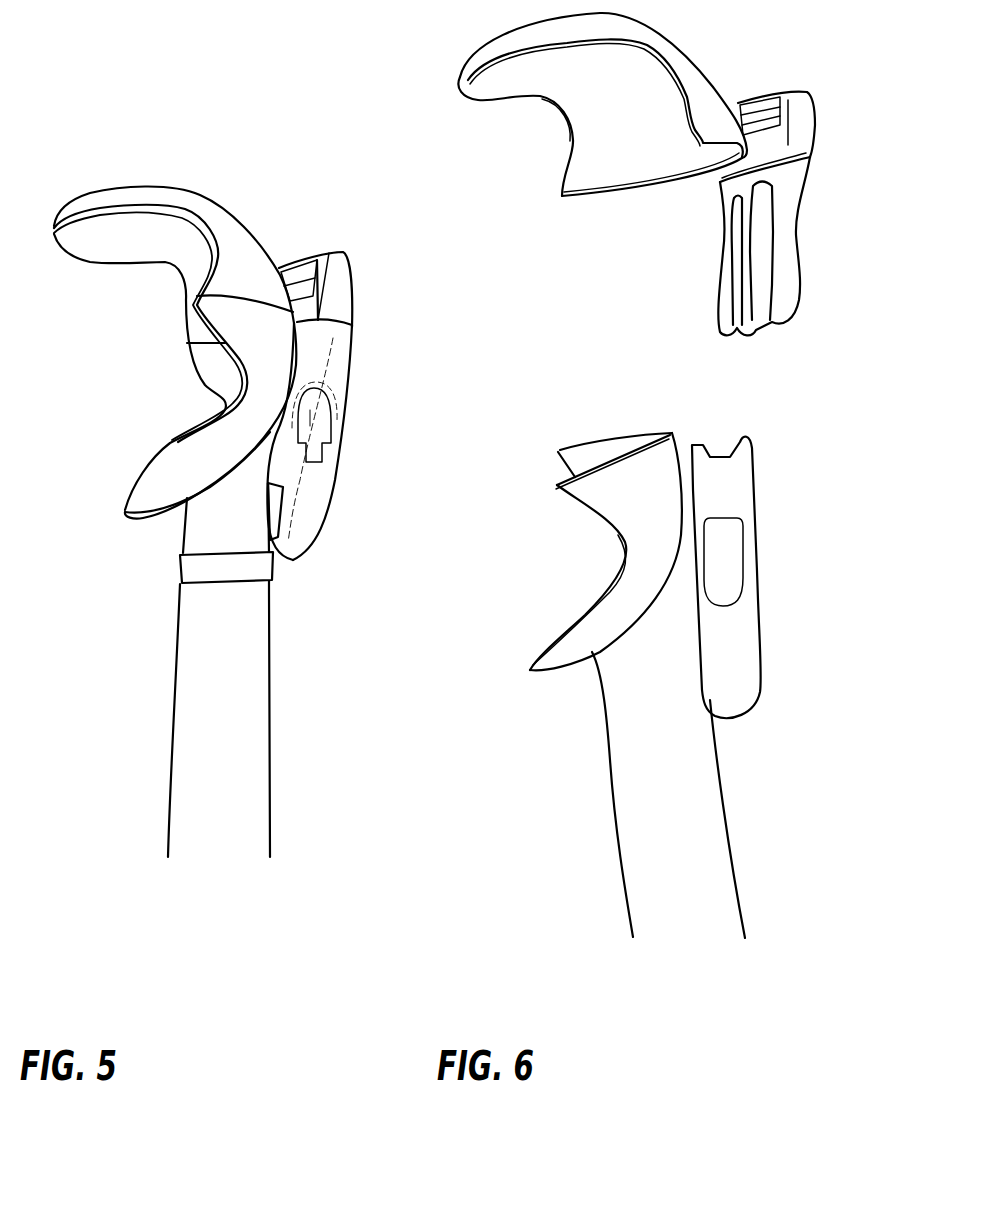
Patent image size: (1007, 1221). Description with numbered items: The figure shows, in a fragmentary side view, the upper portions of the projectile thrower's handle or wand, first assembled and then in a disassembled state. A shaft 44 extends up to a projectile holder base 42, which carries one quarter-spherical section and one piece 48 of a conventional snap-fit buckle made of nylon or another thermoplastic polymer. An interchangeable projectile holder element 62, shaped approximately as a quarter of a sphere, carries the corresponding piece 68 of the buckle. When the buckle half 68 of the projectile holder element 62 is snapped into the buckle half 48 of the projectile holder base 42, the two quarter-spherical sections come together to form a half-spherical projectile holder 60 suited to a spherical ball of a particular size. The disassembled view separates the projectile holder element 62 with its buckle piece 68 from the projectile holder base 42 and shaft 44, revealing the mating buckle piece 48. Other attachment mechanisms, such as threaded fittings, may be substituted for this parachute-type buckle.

In FIG. 5, the projectile holder base 42 is at (193, 466).
In FIG. 6, the projectile holder base 42 is at (630, 602).
In FIG. 5, the shaft 44 is at (237, 795).
In FIG. 6, the shaft 44 is at (653, 892).
In FIG. 5, the piece (half) of a snap-fit buckle 48 is at (320, 355).
In FIG. 6, the piece (half) of a snap-fit buckle 48 is at (717, 490).
In FIG. 5, the projectile holder 60 is at (139, 388).
In FIG. 5, the projectile holder element 62 is at (140, 232).
In FIG. 6, the projectile holder element 62 is at (604, 160).
In FIG. 5, the piece (half) of a buckle 68 is at (340, 301).
In FIG. 6, the piece (half) of a buckle 68 is at (808, 148).